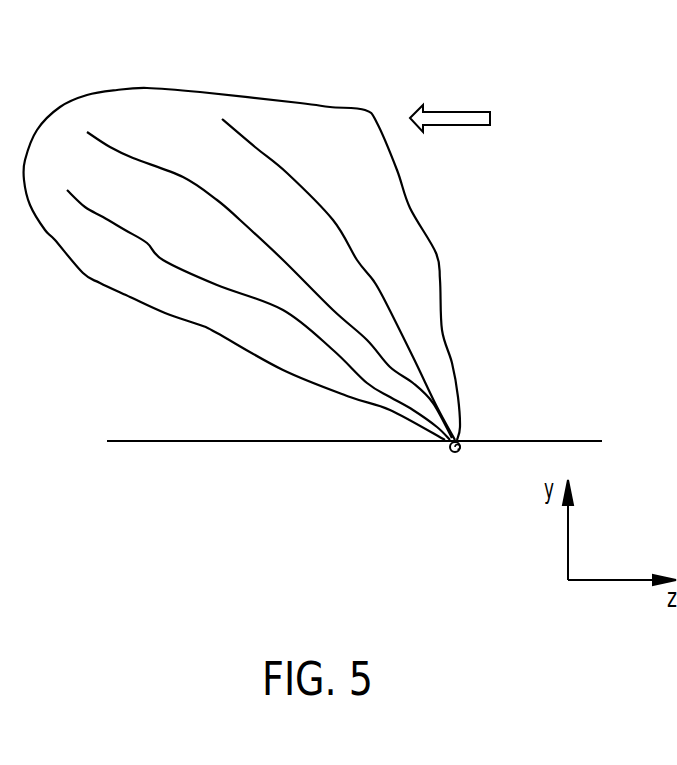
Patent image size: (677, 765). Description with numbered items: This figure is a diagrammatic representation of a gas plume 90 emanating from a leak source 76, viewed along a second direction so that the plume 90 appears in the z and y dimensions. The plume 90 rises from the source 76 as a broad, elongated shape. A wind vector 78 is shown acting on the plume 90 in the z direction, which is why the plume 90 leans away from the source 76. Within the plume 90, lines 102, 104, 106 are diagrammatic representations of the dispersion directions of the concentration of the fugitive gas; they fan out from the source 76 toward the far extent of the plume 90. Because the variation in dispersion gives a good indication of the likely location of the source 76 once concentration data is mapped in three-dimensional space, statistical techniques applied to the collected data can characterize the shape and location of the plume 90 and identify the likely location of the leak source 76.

The source 76 is at (462, 448).
The wind vector 78 is at (452, 112).
The plume 90 is at (470, 266).
The line 102 is at (147, 244).
The line 104 is at (133, 158).
The line 106 is at (285, 172).